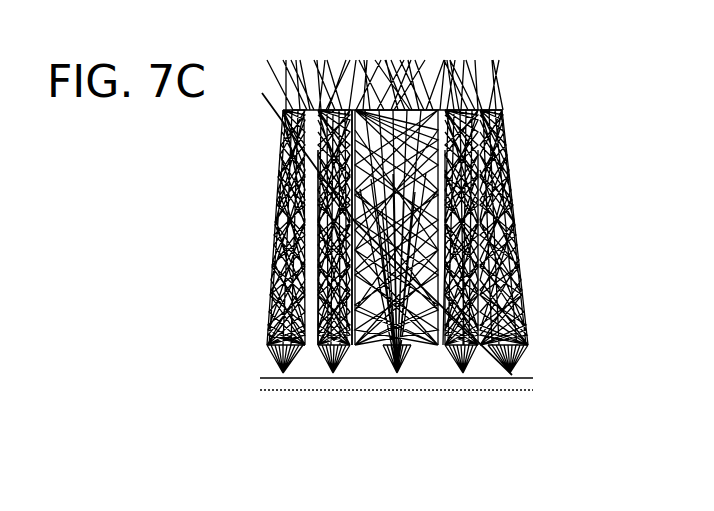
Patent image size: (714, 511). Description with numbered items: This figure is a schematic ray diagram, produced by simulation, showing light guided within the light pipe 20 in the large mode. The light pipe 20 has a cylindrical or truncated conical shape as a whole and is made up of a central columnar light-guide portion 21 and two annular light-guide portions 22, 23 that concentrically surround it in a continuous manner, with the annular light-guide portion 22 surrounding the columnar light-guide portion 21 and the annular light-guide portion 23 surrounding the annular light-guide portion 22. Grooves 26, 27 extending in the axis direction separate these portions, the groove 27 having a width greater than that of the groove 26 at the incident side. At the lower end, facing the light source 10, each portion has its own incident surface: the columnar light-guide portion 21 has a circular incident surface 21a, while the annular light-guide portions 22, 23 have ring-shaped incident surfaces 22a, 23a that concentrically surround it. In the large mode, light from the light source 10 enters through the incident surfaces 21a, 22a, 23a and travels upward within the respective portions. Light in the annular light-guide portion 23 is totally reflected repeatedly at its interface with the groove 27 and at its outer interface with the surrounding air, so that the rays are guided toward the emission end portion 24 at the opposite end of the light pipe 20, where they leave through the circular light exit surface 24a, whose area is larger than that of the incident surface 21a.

The light source 10 is at (513, 383).
The light pipe 20 is at (549, 307).
The columnar light-guide portion 21 is at (428, 225).
The annular light-guide portion 22 is at (457, 245).
The annular light-guide portion 23 is at (502, 270).
The emission end portion 24 is at (517, 112).
The light exit surface 24a is at (410, 103).
The groove 26 is at (353, 232).
The groove 27 is at (315, 258).
The incident surface 21a is at (402, 372).
The incident surface 22a is at (333, 373).
The incident surface 23a is at (283, 373).